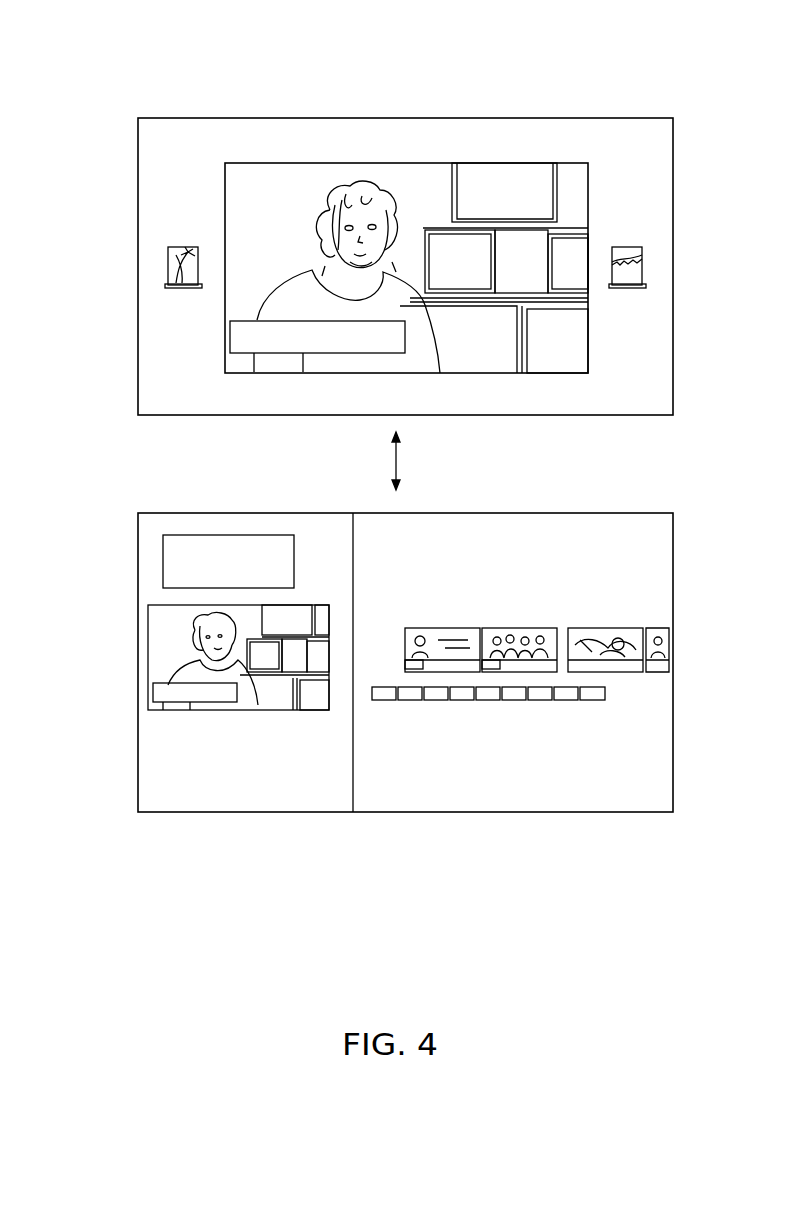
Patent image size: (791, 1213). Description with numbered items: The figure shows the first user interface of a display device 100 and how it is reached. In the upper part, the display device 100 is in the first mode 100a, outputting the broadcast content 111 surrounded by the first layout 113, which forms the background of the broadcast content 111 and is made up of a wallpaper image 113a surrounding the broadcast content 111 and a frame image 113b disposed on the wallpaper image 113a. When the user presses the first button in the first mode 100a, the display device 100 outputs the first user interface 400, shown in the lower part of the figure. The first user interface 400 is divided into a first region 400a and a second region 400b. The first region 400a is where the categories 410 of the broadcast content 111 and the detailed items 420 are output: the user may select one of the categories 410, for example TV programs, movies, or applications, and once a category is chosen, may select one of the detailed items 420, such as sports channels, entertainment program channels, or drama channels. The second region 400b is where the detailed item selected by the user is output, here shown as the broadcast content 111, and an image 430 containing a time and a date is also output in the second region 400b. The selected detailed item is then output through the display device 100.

The display device 100 is at (548, 416).
The first mode 100a is at (397, 82).
The broadcast content 111 is at (286, 176).
The first layout 113 is at (346, 344).
The wallpaper image 113a is at (173, 204).
The frame image 113b is at (167, 268).
The first user interface 400 is at (158, 838).
The first region 400a is at (653, 798).
The second region 400b is at (210, 798).
The categories 410 is at (607, 715).
The detailed items 420 is at (647, 620).
The image containing a time and a date 430 is at (184, 542).